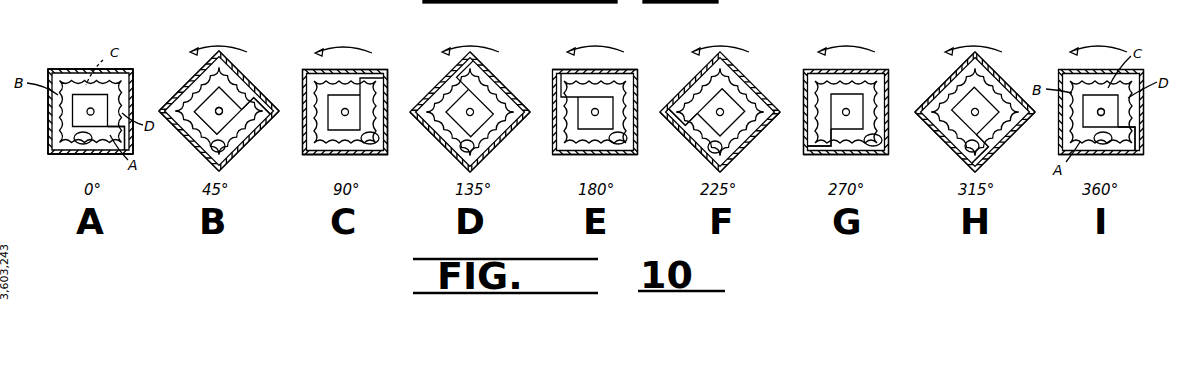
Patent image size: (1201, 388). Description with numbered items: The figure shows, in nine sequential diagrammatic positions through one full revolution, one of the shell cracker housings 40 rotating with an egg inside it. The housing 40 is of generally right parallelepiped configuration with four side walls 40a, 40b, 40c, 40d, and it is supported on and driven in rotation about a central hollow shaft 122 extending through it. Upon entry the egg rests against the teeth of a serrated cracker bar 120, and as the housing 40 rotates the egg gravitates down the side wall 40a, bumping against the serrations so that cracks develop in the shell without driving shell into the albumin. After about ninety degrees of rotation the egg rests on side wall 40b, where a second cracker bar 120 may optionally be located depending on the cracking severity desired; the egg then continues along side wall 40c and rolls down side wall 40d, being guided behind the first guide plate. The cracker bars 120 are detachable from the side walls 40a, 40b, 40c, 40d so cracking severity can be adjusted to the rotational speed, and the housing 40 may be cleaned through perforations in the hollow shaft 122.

In FIG. 10A, the shell cracker housing 40 is at (122, 64).
In FIG. 10C, the shell cracker housing 40 is at (388, 64).
In FIG. 10A, the side wall 40a is at (80, 153).
In FIG. 10B, the side wall 40a is at (236, 140).
In FIG. 10C, the side wall 40a is at (386, 78).
In FIG. 10D, the side wall 40a is at (491, 75).
In FIG. 10E, the side wall 40a is at (614, 70).
In FIG. 10G, the side wall 40a is at (800, 84).
In FIG. 10H, the side wall 40a is at (955, 140).
In FIG. 10I, the side wall 40a is at (1112, 153).
In FIG. 10A, the side wall 40b is at (50, 108).
In FIG. 10B, the side wall 40b is at (196, 138).
In FIG. 10C, the side wall 40b is at (330, 153).
In FIG. 10D, the side wall 40b is at (490, 136).
In FIG. 10E, the side wall 40b is at (639, 82).
In FIG. 10H, the side wall 40b is at (950, 75).
In FIG. 10A, the side wall 40c is at (77, 63).
In FIG. 10B, the side wall 40c is at (191, 68).
In FIG. 10D, the side wall 40c is at (450, 140).
In FIG. 10E, the side wall 40c is at (570, 153).
In FIG. 10F, the side wall 40c is at (740, 136).
In FIG. 10G, the side wall 40c is at (890, 100).
In FIG. 10H, the side wall 40c is at (990, 80).
In FIG. 10A, the side wall 40d is at (132, 78).
In FIG. 10B, the side wall 40d is at (232, 85).
In FIG. 10F, the side wall 40d is at (702, 140).
In FIG. 10G, the side wall 40d is at (833, 153).
In FIG. 10H, the side wall 40d is at (1000, 140).
In FIG. 10I, the side wall 40d is at (1144, 107).
In FIG. 10A, the serrated cracker bar 120 is at (55, 132).
In FIG. 10E, the serrated cracker bar 120 is at (615, 152).
In FIG. 10F, the serrated cracker bar 120 is at (702, 64).
In FIG. 10B, the hollow shaft 122 is at (222, 110).
In FIG. 10I, the hollow shaft 122 is at (1104, 111).